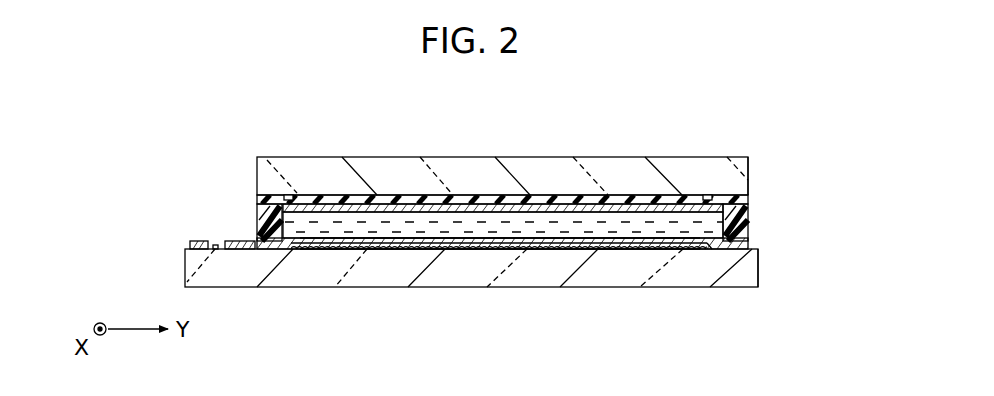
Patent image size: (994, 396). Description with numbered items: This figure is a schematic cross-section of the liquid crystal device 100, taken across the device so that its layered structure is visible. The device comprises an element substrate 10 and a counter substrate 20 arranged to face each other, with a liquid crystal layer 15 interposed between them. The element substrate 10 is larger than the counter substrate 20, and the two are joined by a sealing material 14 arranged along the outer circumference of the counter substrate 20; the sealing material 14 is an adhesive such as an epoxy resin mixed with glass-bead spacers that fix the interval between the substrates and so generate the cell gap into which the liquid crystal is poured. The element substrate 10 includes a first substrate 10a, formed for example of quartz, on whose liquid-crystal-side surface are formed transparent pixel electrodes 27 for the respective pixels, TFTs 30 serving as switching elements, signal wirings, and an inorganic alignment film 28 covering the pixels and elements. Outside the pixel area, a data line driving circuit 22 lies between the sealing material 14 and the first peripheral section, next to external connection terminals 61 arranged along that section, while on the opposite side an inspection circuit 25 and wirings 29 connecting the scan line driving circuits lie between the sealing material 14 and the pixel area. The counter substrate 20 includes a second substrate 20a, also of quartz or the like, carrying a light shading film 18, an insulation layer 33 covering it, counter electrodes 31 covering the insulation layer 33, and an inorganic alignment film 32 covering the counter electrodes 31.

The liquid crystal device 100 is at (655, 77).
The element substrate 10 is at (748, 291).
The first substrate 10a is at (760, 268).
The counter substrate 20 is at (750, 153).
The second substrate 20a is at (750, 172).
The sealing material 14 is at (750, 216).
The liquid crystal layer 15 is at (607, 234).
The light shading film 18 is at (294, 195).
The data line driving circuit 22 is at (238, 241).
The inspection circuit 25 is at (688, 249).
The pixel electrode 27 is at (368, 249).
The inorganic alignment film 28 is at (501, 249).
The wiring 29 is at (710, 249).
The TFT 30 is at (500, 298).
The counter electrode 31 is at (648, 206).
The inorganic alignment film 32 is at (555, 222).
The insulation layer 33 is at (423, 195).
The external connection terminal 61 is at (196, 241).